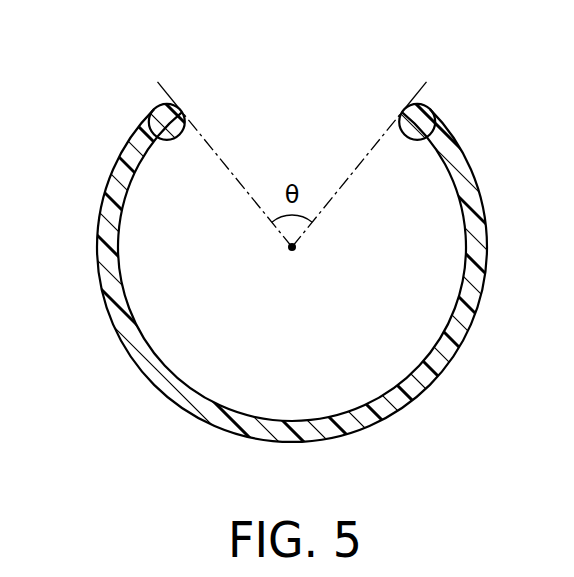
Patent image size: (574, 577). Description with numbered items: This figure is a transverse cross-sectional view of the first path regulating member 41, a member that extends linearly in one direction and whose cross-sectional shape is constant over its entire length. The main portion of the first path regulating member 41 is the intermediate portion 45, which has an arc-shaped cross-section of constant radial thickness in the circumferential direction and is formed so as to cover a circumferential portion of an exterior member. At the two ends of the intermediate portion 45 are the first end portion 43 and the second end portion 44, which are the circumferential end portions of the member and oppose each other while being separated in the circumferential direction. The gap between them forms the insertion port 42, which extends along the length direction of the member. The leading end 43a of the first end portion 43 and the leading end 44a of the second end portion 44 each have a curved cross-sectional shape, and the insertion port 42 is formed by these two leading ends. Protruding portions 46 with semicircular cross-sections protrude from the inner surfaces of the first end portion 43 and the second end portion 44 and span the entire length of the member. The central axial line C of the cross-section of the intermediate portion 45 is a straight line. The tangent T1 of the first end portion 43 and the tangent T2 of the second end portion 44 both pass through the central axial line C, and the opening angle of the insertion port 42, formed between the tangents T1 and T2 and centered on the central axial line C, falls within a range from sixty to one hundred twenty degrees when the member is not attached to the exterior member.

The first path regulating member 41 is at (96, 240).
The insertion port 42 is at (190, 120).
The first end portion 43 is at (158, 110).
The leading end 43a is at (185, 112).
The second end portion 44 is at (435, 108).
The leading end 44a is at (406, 112).
The intermediate portion 45 is at (300, 422).
The protruding portion 46 is at (177, 141).
The tangent T1 is at (254, 203).
The tangent T2 is at (330, 203).
The central axial line C is at (292, 255).